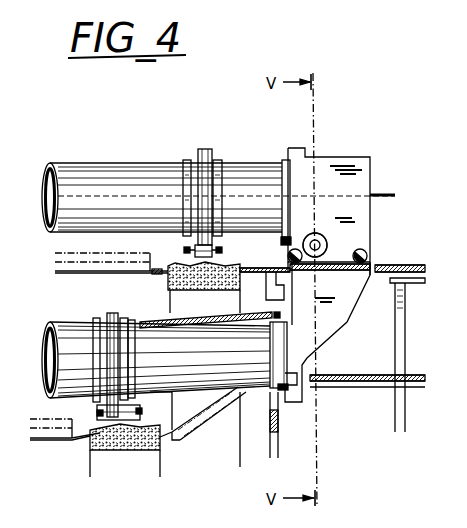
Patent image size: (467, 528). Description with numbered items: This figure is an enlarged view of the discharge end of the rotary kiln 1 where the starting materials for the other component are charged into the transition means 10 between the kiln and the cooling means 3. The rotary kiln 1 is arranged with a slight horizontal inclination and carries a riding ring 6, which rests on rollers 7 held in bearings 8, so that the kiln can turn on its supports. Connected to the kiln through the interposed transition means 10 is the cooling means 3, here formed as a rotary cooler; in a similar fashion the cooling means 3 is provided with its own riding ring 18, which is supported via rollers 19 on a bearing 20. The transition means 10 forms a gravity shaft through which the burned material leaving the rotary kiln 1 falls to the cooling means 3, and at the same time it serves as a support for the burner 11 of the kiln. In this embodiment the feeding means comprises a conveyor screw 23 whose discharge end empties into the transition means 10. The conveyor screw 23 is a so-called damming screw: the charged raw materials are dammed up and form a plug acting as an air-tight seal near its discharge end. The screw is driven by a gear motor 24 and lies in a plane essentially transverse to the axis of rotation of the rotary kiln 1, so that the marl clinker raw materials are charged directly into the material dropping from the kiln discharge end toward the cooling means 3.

The rotary kiln 1 is at (137, 163).
The cooling means 3 is at (78, 328).
The riding ring 6 is at (205, 150).
The rollers 7 is at (226, 267).
The bearings 8 is at (184, 291).
The transition means 10 is at (373, 170).
The burner 11 is at (381, 194).
The riding ring 18 is at (110, 313).
The rollers 19 is at (88, 440).
The bearing 20 is at (113, 450).
The conveyor screw 23 is at (328, 242).
The gear motor 24 is at (315, 245).